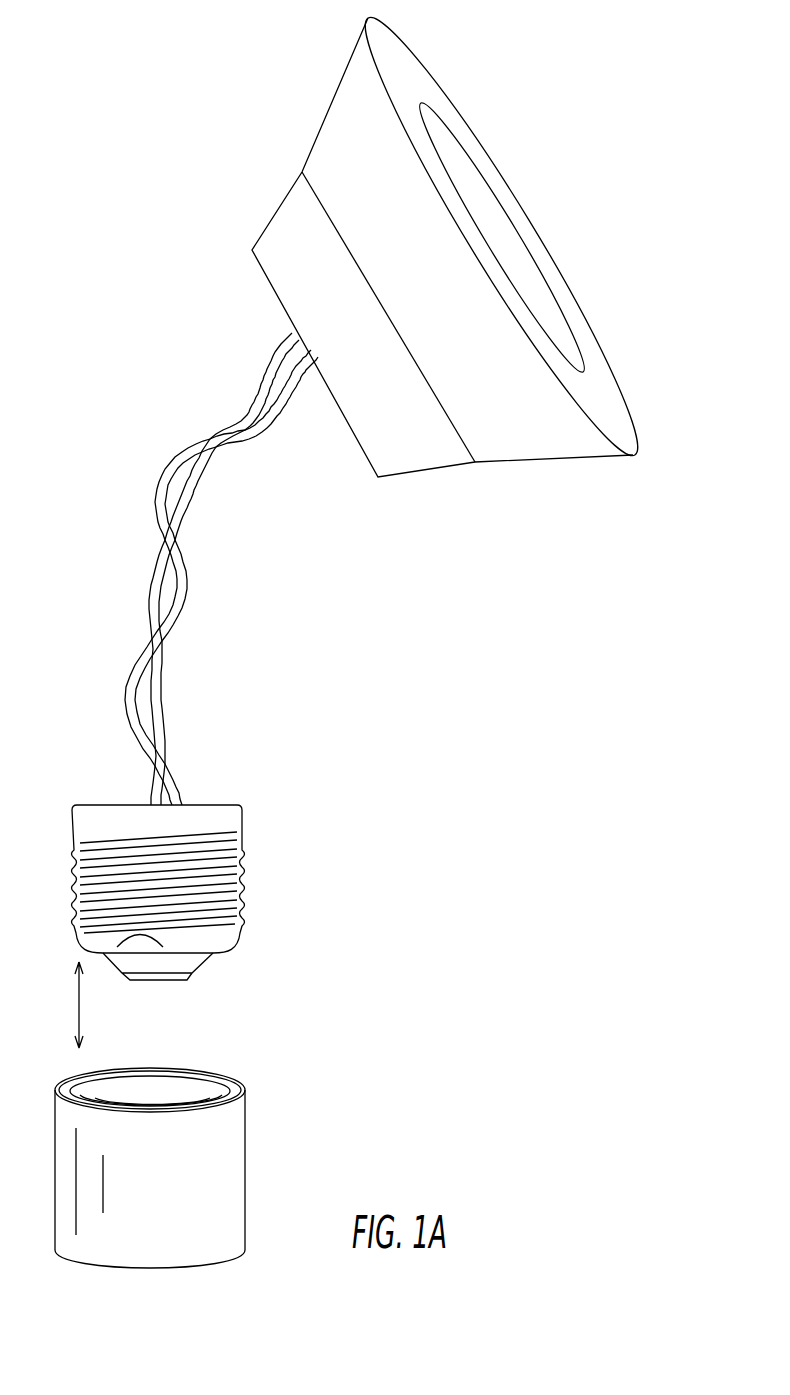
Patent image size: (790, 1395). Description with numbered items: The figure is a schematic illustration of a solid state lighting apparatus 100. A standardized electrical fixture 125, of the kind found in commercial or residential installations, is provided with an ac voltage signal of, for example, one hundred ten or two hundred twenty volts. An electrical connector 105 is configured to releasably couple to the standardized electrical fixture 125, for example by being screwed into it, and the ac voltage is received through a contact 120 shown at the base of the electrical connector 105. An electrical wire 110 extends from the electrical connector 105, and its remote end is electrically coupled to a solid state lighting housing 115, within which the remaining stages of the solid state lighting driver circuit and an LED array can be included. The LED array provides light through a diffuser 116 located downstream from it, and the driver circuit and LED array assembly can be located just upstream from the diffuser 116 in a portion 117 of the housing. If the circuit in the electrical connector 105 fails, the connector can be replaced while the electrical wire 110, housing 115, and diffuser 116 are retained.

The solid state lighting apparatus 100 is at (690, 80).
The electrical connector 105 is at (243, 873).
The electrical wire 110 is at (183, 620).
The solid state lighting housing 115 is at (440, 465).
The diffuser 116 is at (548, 253).
The portion of the housing 117 is at (548, 458).
The contact 120 is at (150, 980).
The standardized electrical fixture 125 is at (247, 1175).